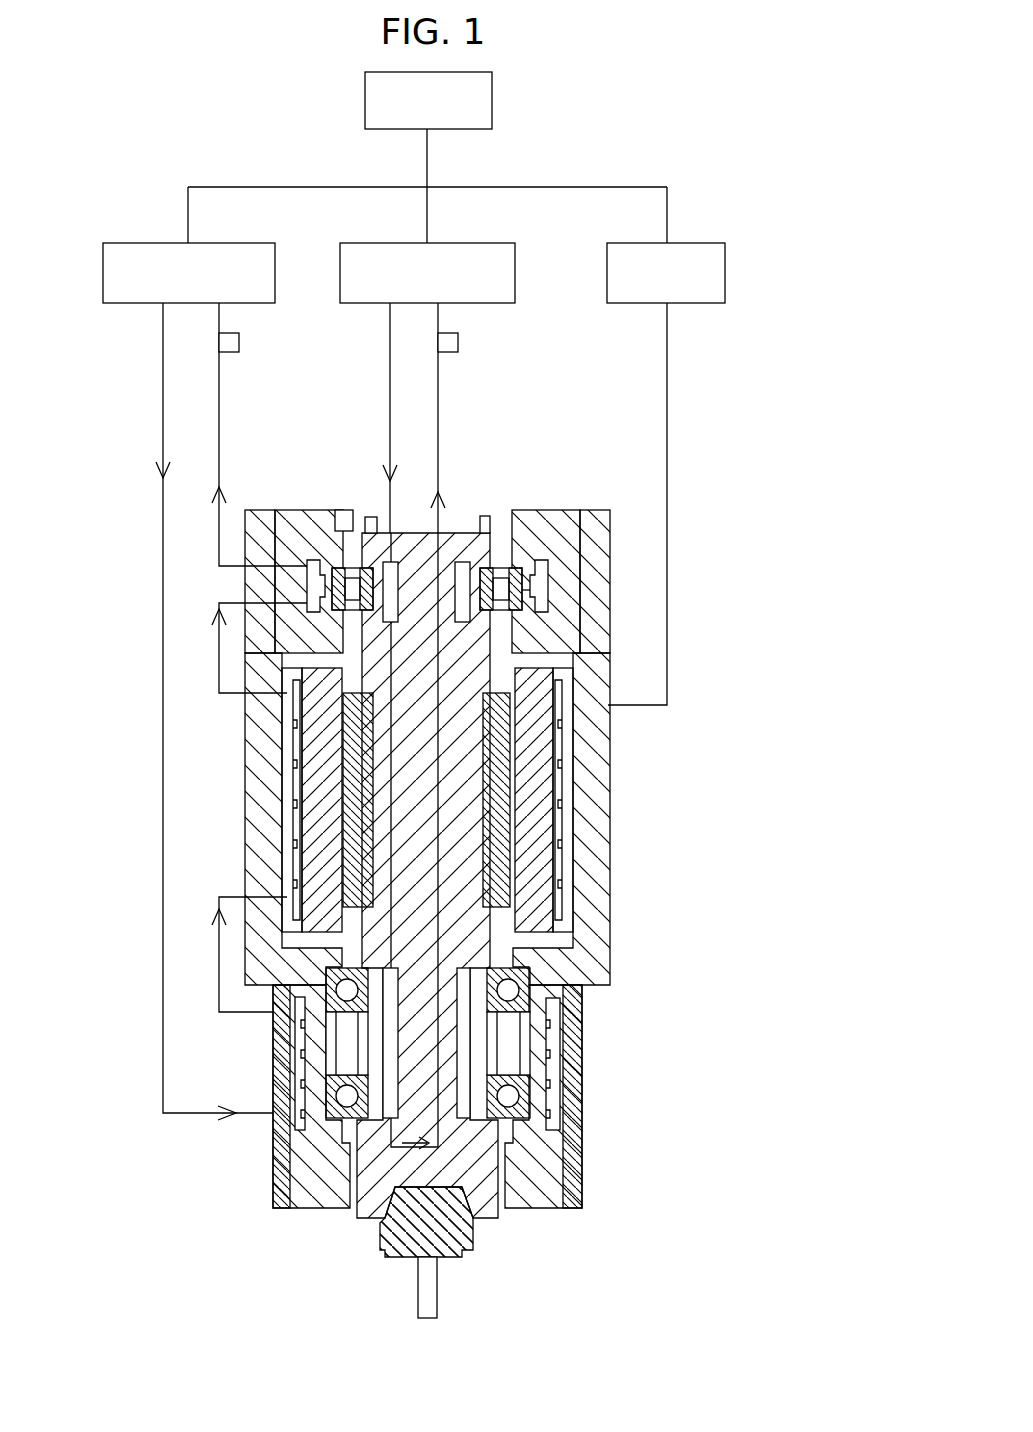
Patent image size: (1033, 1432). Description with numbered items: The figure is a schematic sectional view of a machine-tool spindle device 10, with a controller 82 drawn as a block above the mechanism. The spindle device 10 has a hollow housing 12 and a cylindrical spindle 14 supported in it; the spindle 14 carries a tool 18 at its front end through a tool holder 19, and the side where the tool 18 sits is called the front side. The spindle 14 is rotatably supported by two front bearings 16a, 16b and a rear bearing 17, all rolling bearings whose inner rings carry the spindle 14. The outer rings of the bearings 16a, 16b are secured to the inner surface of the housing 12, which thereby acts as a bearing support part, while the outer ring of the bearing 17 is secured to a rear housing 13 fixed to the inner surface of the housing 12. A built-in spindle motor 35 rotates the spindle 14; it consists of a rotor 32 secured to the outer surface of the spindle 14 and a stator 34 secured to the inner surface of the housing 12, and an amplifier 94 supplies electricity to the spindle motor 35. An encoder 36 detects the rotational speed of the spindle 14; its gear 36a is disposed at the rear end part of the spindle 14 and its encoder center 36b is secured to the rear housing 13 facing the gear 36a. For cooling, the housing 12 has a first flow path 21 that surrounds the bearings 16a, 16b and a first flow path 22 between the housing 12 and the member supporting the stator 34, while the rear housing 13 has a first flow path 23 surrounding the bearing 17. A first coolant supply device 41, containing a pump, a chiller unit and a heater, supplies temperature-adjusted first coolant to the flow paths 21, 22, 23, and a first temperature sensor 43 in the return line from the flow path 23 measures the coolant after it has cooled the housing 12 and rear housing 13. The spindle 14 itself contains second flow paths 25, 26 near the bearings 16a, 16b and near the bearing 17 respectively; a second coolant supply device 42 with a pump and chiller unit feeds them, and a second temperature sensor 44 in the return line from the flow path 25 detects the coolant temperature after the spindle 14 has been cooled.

The spindle device 10 is at (703, 121).
The housing 12 is at (595, 962).
The rear housing 13 is at (290, 528).
The spindle 14 is at (487, 1188).
The bearing 16a is at (530, 1096).
The bearing 16b is at (530, 993).
The bearing 17 is at (522, 592).
The tool 18 is at (428, 1290).
The tool holder 19 is at (445, 1237).
The first flow path 21 is at (290, 1123).
The first flow path 22 is at (295, 805).
The first flow path 23 is at (540, 566).
The second flow path 25 is at (383, 1047).
The second flow path 26 is at (462, 565).
The rotor 32 is at (500, 780).
The stator 34 is at (535, 825).
The spindle motor 35 is at (511, 800).
The encoder 36 is at (322, 453).
The gear 36a is at (370, 518).
The encoder center 36b is at (343, 518).
The first coolant supply device 41 is at (145, 243).
The second coolant supply device 42 is at (388, 244).
The first temperature sensor 43 is at (239, 342).
The second temperature sensor 44 is at (458, 342).
The controller 82 is at (492, 100).
The amplifier 94 is at (725, 278).